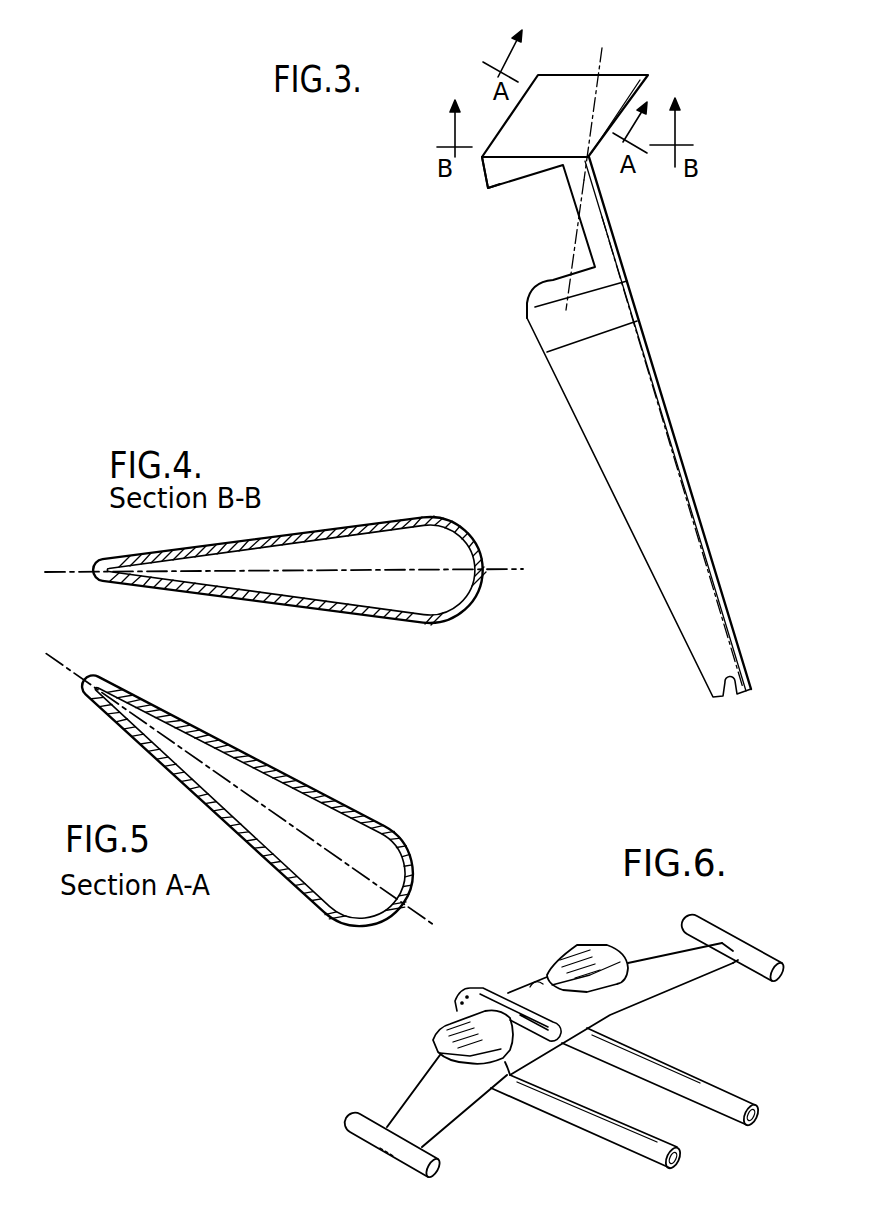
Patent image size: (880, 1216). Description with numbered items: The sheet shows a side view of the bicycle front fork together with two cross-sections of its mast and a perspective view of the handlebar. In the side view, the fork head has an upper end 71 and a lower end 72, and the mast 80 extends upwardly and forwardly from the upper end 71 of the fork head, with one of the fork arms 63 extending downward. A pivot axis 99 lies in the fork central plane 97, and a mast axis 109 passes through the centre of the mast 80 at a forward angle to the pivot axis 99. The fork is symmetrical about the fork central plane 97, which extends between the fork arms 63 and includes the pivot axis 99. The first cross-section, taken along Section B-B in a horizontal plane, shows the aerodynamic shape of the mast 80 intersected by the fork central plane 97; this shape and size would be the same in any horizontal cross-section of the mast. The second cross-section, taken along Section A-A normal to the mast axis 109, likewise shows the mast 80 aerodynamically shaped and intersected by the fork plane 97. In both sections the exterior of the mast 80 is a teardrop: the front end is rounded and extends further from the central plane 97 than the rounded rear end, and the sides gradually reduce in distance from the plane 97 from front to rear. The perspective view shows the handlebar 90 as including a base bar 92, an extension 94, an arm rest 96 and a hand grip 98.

In FIG. 3, the fork arms 63 is at (683, 513).
In FIG. 3, the upper end of fork head 71 is at (493, 170).
In FIG. 3, the lower end of fork head 72 is at (548, 298).
In FIG. 3, the mast 80 is at (515, 125).
In FIG. 4, the mast 80 is at (397, 519).
In FIG. 5, the mast 80 is at (382, 815).
In FIG. 4, the fork central plane 97 is at (510, 571).
In FIG. 5, the fork central plane 97 is at (423, 907).
In FIG. 3, the pivot axis 99 is at (538, 222).
In FIG. 3, the mast axis 109 is at (602, 48).
In FIG. 6, the handlebar 90 is at (382, 1034).
In FIG. 6, the base bar 92 is at (447, 1103).
In FIG. 6, the extension 94 is at (618, 1133).
In FIG. 6, the arm rest 96 is at (587, 950).
In FIG. 6, the hand grip 98 is at (760, 983).